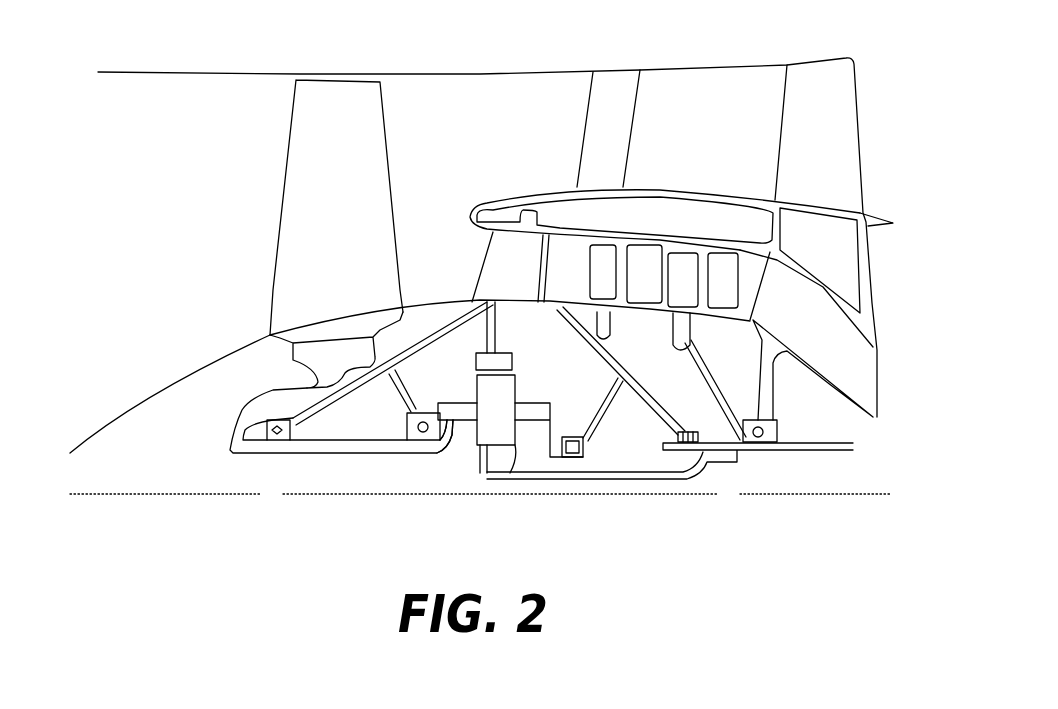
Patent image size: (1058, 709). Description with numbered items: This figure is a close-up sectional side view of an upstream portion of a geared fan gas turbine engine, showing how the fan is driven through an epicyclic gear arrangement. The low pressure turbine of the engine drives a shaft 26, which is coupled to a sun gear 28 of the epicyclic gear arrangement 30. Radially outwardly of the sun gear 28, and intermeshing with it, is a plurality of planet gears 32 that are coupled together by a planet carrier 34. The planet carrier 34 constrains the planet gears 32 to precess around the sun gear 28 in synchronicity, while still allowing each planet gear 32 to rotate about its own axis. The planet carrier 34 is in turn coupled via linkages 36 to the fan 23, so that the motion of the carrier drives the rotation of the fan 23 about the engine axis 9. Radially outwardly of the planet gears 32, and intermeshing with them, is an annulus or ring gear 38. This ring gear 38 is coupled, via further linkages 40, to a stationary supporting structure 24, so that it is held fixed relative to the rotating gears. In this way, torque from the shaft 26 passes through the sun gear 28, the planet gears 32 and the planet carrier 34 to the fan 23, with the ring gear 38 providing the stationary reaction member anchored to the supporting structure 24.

The engine axis 9 is at (240, 495).
The fan 23 is at (307, 247).
The stationary supporting structure 24 is at (510, 262).
The shaft 26 is at (743, 457).
The sun gear 28 is at (492, 473).
The epicyclic gear arrangement 30 is at (452, 447).
The planet gears 32 is at (477, 430).
The planet carrier 34 is at (547, 435).
The linkages 36 is at (450, 440).
The ring gear 38 is at (477, 365).
The linkages 40 is at (503, 327).